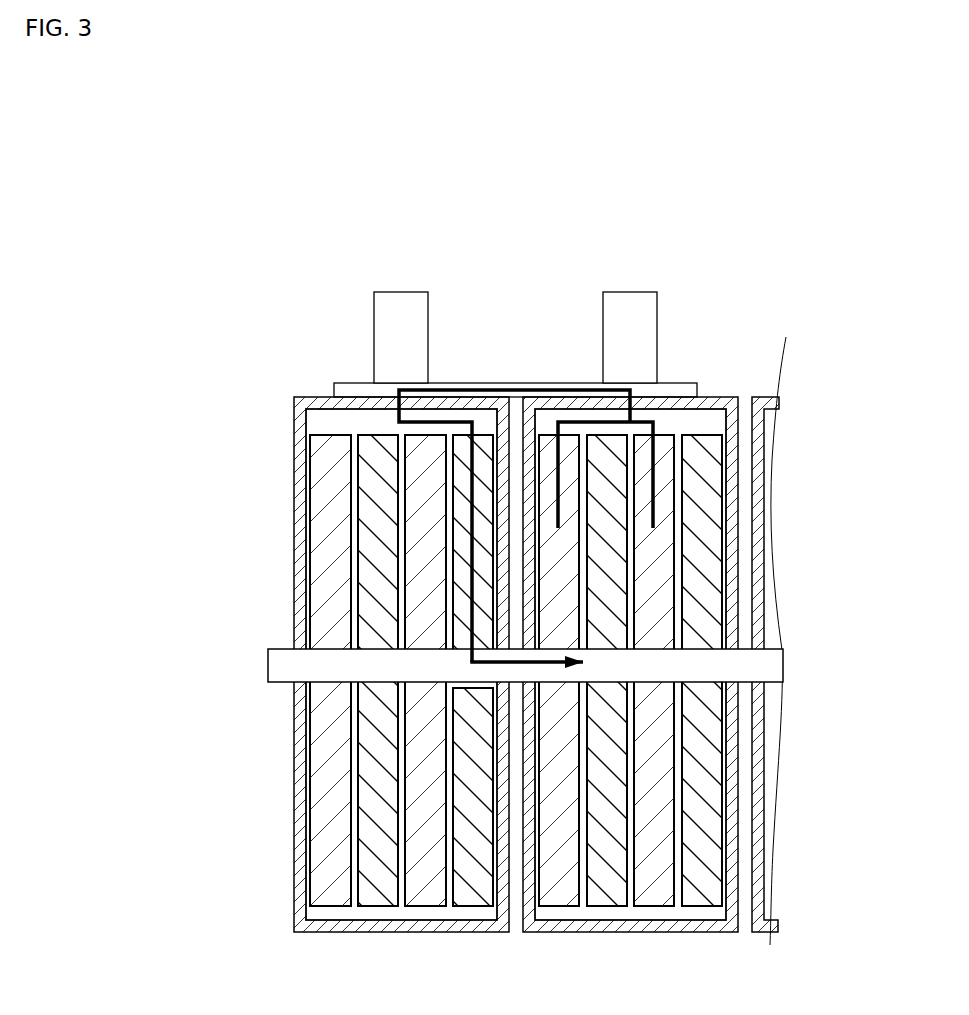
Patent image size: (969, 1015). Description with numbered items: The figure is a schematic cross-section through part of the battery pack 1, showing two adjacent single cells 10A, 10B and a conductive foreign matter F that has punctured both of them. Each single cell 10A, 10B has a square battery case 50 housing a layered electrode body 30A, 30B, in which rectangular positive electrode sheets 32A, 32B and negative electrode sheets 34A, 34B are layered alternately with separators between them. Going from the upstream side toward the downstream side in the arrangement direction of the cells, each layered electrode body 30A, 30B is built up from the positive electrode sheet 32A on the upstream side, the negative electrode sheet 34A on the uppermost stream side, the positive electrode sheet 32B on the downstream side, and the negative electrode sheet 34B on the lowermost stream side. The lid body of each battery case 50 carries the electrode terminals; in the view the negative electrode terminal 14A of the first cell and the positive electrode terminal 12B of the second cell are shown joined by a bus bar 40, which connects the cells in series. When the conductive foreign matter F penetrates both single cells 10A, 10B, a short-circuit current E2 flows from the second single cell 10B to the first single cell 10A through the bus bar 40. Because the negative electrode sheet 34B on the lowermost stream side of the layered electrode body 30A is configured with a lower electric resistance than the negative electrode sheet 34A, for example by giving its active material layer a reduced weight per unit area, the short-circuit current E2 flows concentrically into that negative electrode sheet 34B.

The battery pack 1 is at (268, 219).
The negative electrode terminal 14A is at (399, 290).
The positive electrode terminal 12B is at (629, 290).
The bus bar 40 is at (683, 383).
The short-circuit current E2 is at (515, 390).
The conductive foreign matter F is at (279, 648).
The single cell 10A is at (293, 903).
The single cell 10B is at (740, 920).
The layered electrode body 30A is at (310, 786).
The layered electrode body 30B is at (722, 793).
The battery case 50 is at (293, 868).
The positive electrode sheet 32A is at (331, 906).
The negative electrode sheet 34A is at (380, 906).
The positive electrode sheet 32B is at (425, 906).
The negative electrode sheet 34B is at (475, 906).